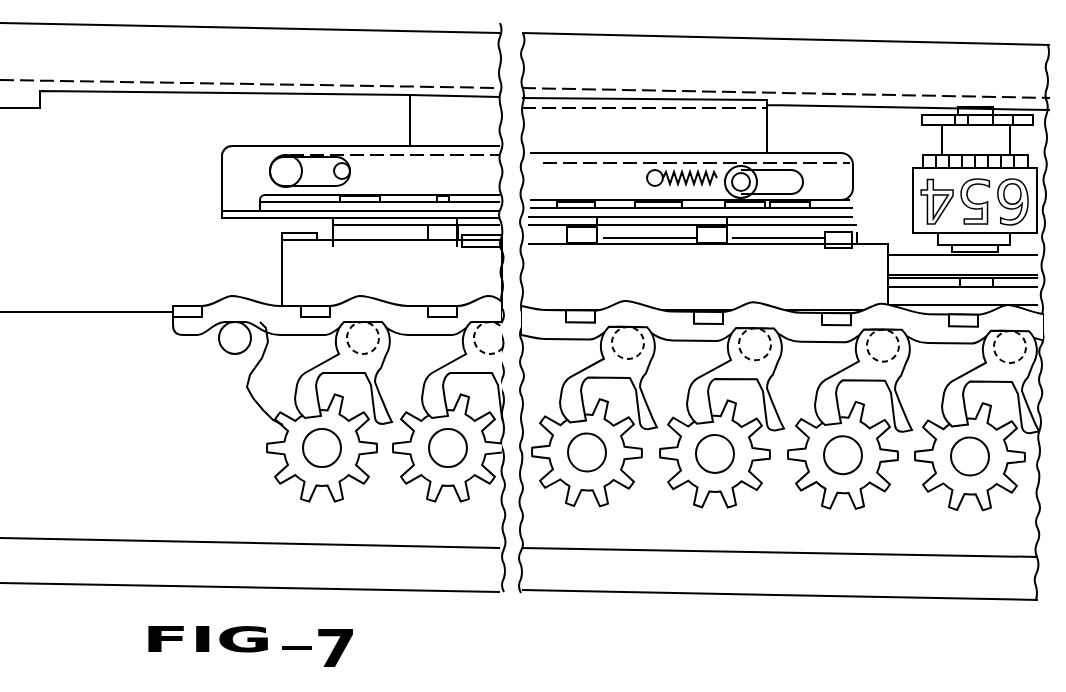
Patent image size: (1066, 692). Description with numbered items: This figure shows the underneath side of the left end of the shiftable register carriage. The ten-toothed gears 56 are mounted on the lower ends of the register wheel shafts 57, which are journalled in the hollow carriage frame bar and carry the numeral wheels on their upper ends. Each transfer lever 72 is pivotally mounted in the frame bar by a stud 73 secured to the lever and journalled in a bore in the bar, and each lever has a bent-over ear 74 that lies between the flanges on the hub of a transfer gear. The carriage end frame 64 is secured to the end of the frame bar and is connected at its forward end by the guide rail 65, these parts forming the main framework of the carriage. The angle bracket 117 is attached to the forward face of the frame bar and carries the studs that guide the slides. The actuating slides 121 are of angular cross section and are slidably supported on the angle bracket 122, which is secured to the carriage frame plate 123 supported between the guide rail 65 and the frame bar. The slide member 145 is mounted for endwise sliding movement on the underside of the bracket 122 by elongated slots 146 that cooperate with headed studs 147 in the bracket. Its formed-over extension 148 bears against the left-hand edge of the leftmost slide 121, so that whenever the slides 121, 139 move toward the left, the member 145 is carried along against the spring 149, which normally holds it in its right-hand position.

The ten-toothed gear 56 is at (287, 474).
The register wheel shaft 57 is at (330, 460).
The carriage end frame 64 is at (0, 232).
The guide rail 65 is at (672, 46).
The transfer lever 72 is at (230, 303).
The stud 73 is at (360, 342).
The bent-over ear 74 is at (184, 310).
The angle bracket 117 is at (298, 283).
The actuating slide 121 is at (443, 220).
The angle bracket 122 is at (286, 207).
The carriage frame plate 123 is at (628, 117).
The slide 139 is at (483, 218).
The slide member 145 is at (232, 178).
The elongated slot 146 is at (340, 165).
The headed stud 147 is at (283, 164).
The formed-over extension 148 is at (239, 215).
The spring 149 is at (694, 167).